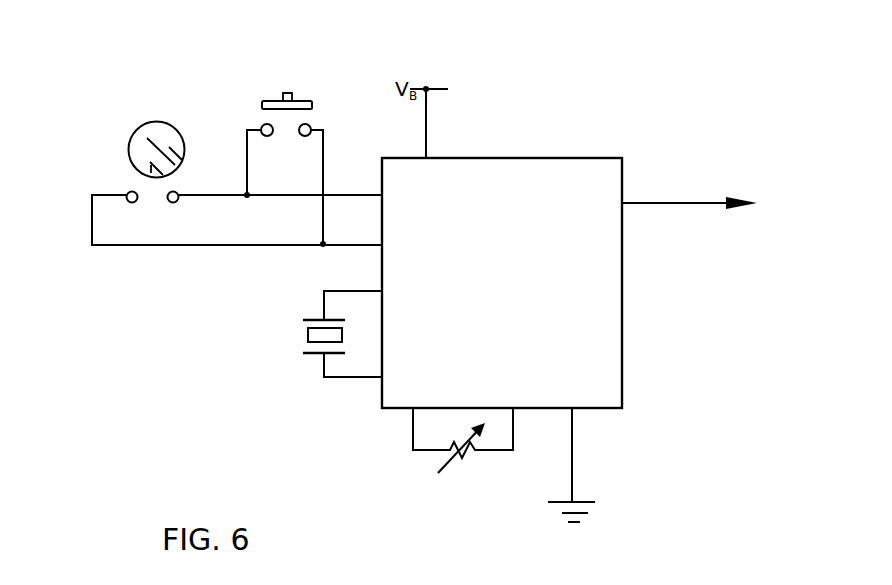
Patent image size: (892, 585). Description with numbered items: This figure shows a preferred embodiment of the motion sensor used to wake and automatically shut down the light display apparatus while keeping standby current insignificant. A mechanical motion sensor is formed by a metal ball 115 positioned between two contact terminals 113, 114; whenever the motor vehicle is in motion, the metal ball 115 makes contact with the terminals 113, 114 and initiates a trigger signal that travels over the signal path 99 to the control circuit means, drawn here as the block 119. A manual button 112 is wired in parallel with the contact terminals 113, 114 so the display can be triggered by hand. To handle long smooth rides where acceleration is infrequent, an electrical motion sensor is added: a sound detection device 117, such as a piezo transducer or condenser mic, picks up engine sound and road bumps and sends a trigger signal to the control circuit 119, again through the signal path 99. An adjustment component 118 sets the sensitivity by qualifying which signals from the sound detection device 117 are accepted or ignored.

The signal path 99 is at (652, 205).
The switch 112 is at (312, 105).
The contact terminal 113 is at (179, 192).
The contact terminal 114 is at (129, 193).
The metal ball 115 is at (157, 125).
The sound detection device 117 is at (300, 337).
The adjustment component 118 is at (470, 443).
The motion sensor control circuit means 119 is at (580, 168).